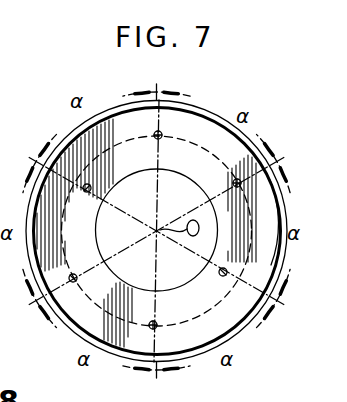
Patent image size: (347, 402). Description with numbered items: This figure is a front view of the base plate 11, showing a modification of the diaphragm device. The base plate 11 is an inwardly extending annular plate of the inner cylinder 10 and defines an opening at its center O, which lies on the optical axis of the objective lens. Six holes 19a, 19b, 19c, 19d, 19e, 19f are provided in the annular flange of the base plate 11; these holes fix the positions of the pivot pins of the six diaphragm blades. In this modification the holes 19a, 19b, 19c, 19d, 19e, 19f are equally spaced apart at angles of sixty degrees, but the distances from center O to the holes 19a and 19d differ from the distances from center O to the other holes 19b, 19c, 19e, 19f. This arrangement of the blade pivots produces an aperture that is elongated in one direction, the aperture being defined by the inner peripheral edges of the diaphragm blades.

The inner cylinder 10 is at (199, 110).
The base plate 11 is at (186, 168).
The hole 19a is at (90, 185).
The hole 19b is at (172, 133).
The hole 19c is at (241, 184).
The hole 19d is at (227, 273).
The hole 19e is at (154, 329).
The hole 19f is at (77, 277).